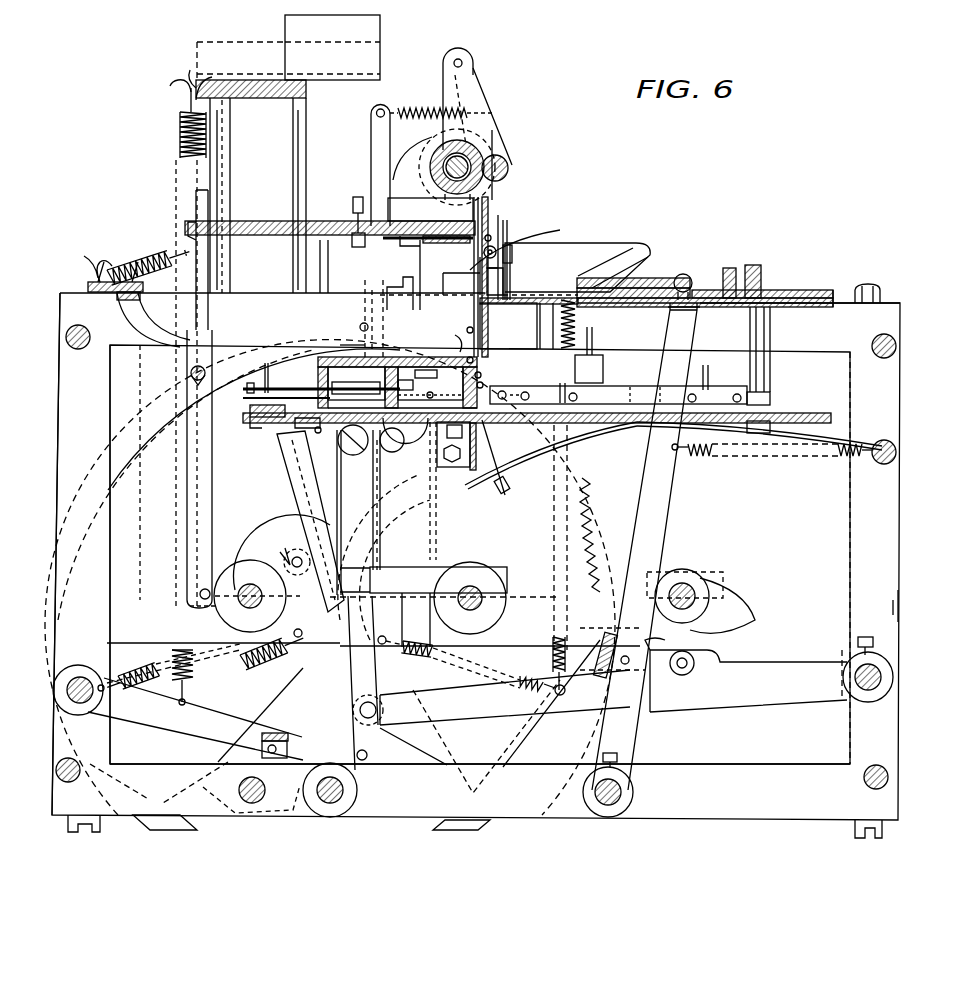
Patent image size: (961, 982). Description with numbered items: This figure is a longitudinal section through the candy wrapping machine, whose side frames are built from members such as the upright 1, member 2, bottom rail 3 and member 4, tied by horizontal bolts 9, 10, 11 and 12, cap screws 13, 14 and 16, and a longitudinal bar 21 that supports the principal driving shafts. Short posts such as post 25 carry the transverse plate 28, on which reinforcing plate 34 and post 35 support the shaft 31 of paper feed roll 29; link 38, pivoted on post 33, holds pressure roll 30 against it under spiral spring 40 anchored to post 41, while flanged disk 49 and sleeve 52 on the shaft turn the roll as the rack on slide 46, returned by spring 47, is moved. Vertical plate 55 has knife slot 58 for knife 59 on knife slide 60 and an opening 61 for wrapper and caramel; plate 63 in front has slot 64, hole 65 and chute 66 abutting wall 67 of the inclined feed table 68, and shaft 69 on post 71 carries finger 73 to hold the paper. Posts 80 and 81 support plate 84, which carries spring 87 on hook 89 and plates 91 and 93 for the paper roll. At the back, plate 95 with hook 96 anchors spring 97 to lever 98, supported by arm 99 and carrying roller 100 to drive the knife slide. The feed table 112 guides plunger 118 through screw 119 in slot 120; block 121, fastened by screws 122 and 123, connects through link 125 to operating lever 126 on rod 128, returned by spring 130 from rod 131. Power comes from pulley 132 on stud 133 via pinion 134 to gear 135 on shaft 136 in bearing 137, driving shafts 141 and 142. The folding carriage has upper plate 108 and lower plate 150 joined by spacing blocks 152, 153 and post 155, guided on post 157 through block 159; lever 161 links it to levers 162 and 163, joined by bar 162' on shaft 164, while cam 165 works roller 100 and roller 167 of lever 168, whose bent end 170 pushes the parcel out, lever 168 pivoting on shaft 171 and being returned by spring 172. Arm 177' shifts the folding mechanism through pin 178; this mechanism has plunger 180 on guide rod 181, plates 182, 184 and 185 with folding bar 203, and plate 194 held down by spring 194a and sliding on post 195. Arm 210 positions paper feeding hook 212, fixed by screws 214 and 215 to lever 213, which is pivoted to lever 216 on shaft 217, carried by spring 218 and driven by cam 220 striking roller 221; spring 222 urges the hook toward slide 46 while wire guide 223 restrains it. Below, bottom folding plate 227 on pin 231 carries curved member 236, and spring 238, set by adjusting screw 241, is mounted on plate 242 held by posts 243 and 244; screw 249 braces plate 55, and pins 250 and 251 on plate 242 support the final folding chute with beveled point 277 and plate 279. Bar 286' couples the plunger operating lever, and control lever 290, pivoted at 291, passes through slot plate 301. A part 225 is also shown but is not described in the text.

The side frame member 1 is at (897, 406).
The side frame member 2 is at (800, 316).
The bottom rail 3 is at (480, 784).
The side frame member 4 is at (81, 554).
The horizontally extending bolt 9 is at (896, 344).
The horizontally extending bolt 10 is at (66, 336).
The horizontally extending bolt 11 is at (56, 770).
The horizontally extending bolt 12 is at (888, 774).
The cap screw 13 is at (884, 831).
The cap screw 14 is at (68, 825).
The cap screw 16 is at (866, 287).
The longitudinally extending bar 21 is at (819, 558).
The short post 25 is at (320, 280).
The transversely extending plate 28 is at (352, 222).
The paper feed roll 29 is at (430, 170).
The pressure roll 30 is at (509, 170).
The shaft 31 is at (470, 158).
The post 33 is at (443, 75).
The reinforcing plate 34 is at (405, 221).
The post 35 is at (445, 194).
The link 38 is at (480, 96).
The spiral spring 40 is at (417, 109).
The post 41 is at (371, 145).
The slide 46 is at (453, 277).
The spring 47 is at (864, 440).
The flanged disk 49 is at (440, 141).
The sleeve 52 is at (412, 153).
The vertically extending plate 55 is at (468, 328).
The knife slot 58 is at (441, 248).
The knife 59 is at (418, 244).
The knife slide 60 is at (258, 222).
The opening 61 is at (480, 280).
The plate 63 is at (490, 235).
The slot 64 is at (500, 232).
The hole 65 is at (500, 287).
The chute 66 is at (512, 256).
The vertically extending wall 67 is at (508, 240).
The inclined feed table 68 is at (588, 246).
The shaft 69 is at (484, 254).
The post 71 is at (519, 243).
The finger 73 is at (487, 265).
The post 80 is at (303, 140).
The post 81 is at (222, 162).
The plate 84 is at (266, 100).
The spring 87 is at (178, 133).
The hook 89 is at (170, 86).
The vertically extending plate 91 is at (288, 47).
The plate 93 is at (192, 72).
The transversely extending plate 95 is at (88, 287).
The hook 96 is at (85, 263).
The spring 97 is at (130, 262).
The lever 98 is at (212, 283).
The arm 99 is at (183, 360).
The roller 100 is at (190, 610).
The upper carriage plate 108 is at (345, 348).
The feed table 112 is at (822, 307).
The plunger 118 is at (653, 279).
The short screw 119 is at (672, 310).
The slot 120 is at (625, 303).
The block 121 is at (766, 284).
The screw 122 is at (760, 268).
The screw 123 is at (730, 268).
The link 125 is at (698, 268).
The operating lever 126 is at (668, 521).
The rod 128 is at (625, 785).
The spring 130 is at (704, 457).
The transversely extending rod 131 is at (896, 448).
The pulley 132 is at (122, 472).
The stud 133 is at (346, 660).
The pinion 134 is at (384, 557).
The large gear 135 is at (590, 522).
The shaft 136 is at (482, 604).
The bearing 137 is at (507, 585).
The shaft 141 is at (667, 640).
The shaft 142 is at (238, 610).
The lower plate 150 is at (409, 431).
The spacing block 152 is at (318, 370).
The spacing block 153 is at (430, 374).
The post 155 is at (499, 366).
The post 157 is at (365, 315).
The block 159 is at (345, 453).
The lever 161 is at (327, 512).
The lever 162 is at (169, 669).
The bar 162' is at (251, 736).
The lever 163 is at (214, 723).
The shaft 164 is at (67, 698).
The cam 165 is at (262, 523).
The roller 167 is at (279, 558).
The lever 168 is at (309, 520).
The bent upper end 170 is at (283, 438).
The shaft 171 is at (358, 788).
The spring 172 is at (268, 660).
The arm 177' is at (238, 429).
The pin 178 is at (246, 392).
The plunger 180 is at (495, 378).
The guide rod 181 is at (250, 411).
The plate 182 is at (319, 432).
The plate 184 is at (249, 377).
The plate 185 is at (222, 392).
The plate 194 is at (418, 383).
The spring 194a is at (443, 341).
The post 195 is at (266, 363).
The folding bar 203 is at (397, 382).
The arm 210 is at (298, 426).
The paper feeding hook 212 is at (401, 275).
The lever 213 is at (395, 557).
The screw 214 is at (382, 498).
The screw 215 is at (382, 522).
The lever 216 is at (491, 716).
The shaft 217 is at (895, 668).
The spring 218 is at (552, 660).
The cam 220 is at (740, 583).
The roller 221 is at (692, 674).
The spring 222 is at (434, 660).
The wire guide 223 is at (360, 328).
The rod 225 is at (421, 491).
The bottom folding plate 227 is at (375, 478).
The pin 231 is at (470, 470).
The curved member 236 is at (503, 487).
The spring 238 is at (498, 490).
The adjusting screw 241 is at (535, 450).
The plate 242 is at (806, 410).
The short post 243 is at (537, 333).
The short post 244 is at (770, 340).
The screw 249 is at (489, 355).
The pin 250 is at (593, 342).
The pin 251 is at (709, 372).
The beveled point 277 is at (618, 384).
The rearwardly extending plate 279 is at (603, 383).
The bar 286' is at (614, 644).
The lever 290 is at (357, 754).
The pivot 291 is at (240, 795).
The plate 301 is at (880, 642).